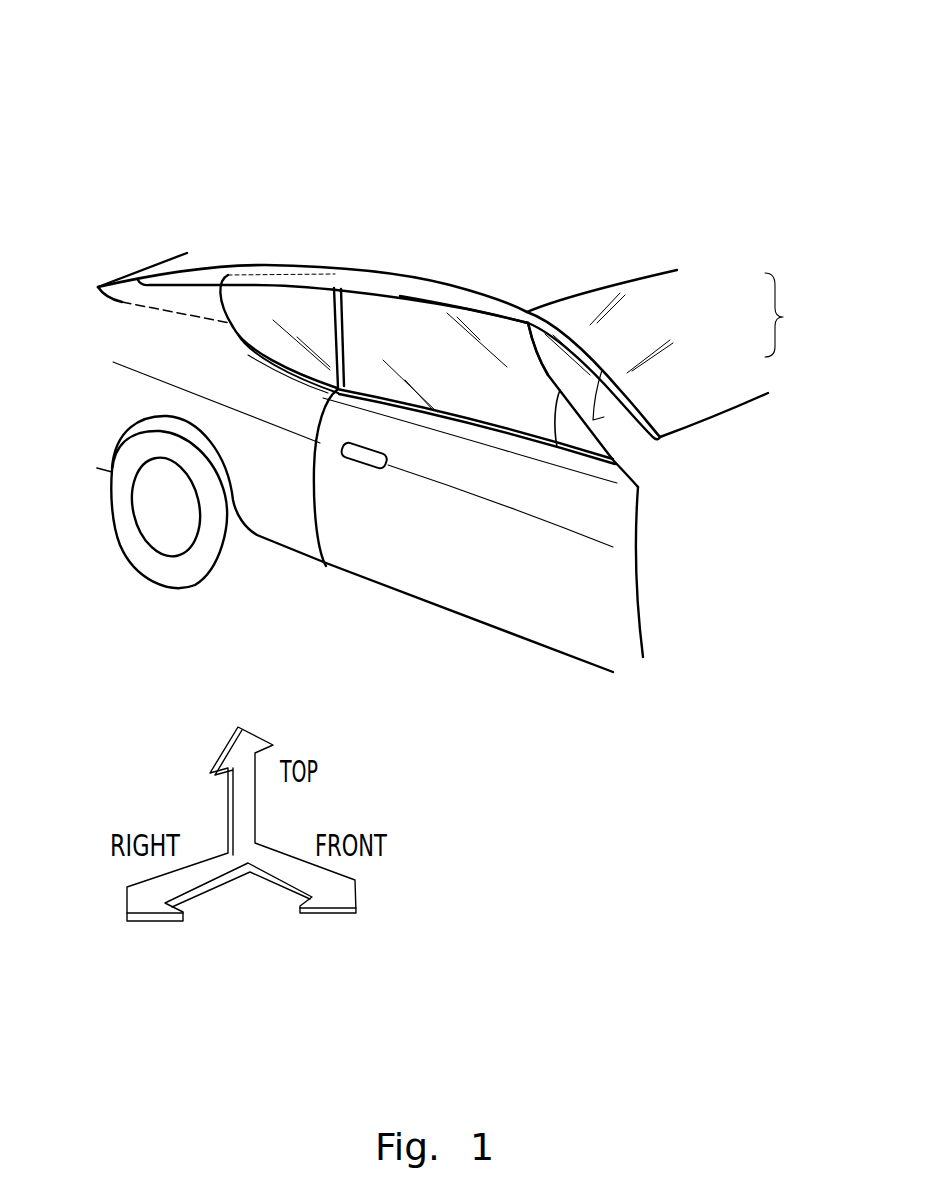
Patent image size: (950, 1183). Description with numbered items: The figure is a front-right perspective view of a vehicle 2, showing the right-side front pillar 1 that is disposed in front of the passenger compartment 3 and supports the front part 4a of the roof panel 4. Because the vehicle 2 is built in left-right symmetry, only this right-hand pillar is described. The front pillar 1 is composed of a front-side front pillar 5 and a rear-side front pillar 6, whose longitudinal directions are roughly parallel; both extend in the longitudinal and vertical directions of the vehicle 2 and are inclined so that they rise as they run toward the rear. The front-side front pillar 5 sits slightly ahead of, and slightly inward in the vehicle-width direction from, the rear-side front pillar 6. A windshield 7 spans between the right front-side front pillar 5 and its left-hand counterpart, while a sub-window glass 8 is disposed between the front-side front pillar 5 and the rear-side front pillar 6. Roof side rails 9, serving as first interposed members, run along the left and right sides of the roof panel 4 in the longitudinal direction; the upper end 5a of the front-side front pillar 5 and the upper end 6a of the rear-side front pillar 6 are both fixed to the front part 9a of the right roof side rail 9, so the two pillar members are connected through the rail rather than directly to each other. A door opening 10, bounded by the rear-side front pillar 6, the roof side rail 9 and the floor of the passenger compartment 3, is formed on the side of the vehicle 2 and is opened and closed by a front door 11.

The front pillar 1 is at (666, 378).
The vehicle 2 is at (252, 104).
The passenger compartment 3 is at (375, 326).
The roof panel 4 is at (522, 232).
The front part of roof panel 4a is at (602, 283).
The front-side front pillar 5 is at (588, 328).
The upper end of front-side front pillar 5a is at (547, 317).
The rear-side front pillar 6 is at (583, 407).
The upper end of rear-side front pillar 6a is at (525, 353).
The windshield 7 is at (670, 288).
The sub-window glass 8 is at (628, 417).
The roof side rail 9 is at (414, 291).
The front part of roof side rail 9a is at (503, 320).
The door opening 10 is at (355, 625).
The front door 11 is at (458, 568).